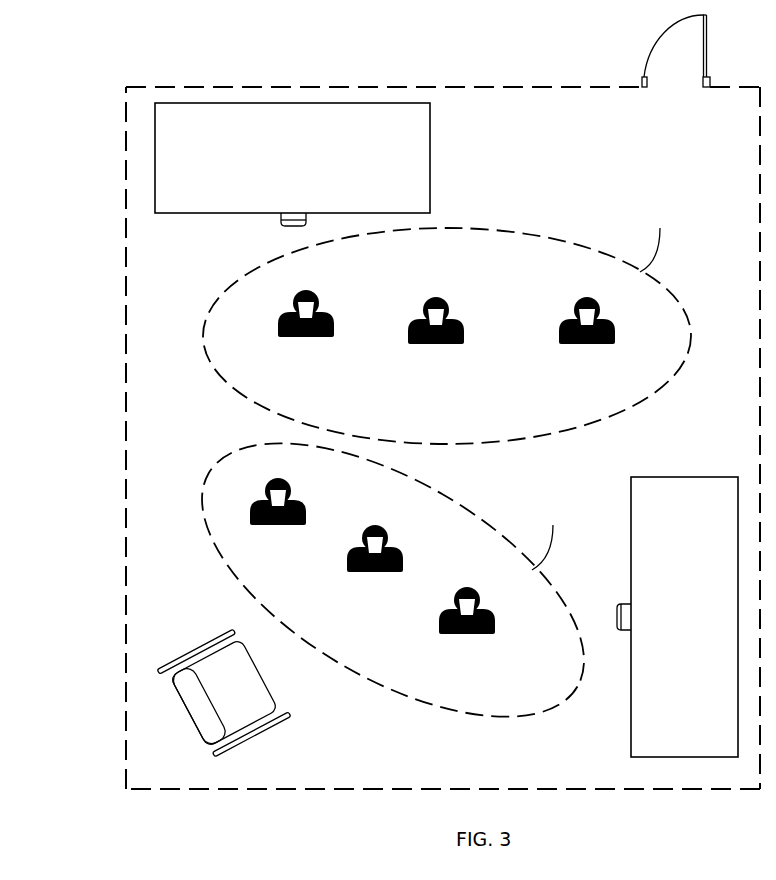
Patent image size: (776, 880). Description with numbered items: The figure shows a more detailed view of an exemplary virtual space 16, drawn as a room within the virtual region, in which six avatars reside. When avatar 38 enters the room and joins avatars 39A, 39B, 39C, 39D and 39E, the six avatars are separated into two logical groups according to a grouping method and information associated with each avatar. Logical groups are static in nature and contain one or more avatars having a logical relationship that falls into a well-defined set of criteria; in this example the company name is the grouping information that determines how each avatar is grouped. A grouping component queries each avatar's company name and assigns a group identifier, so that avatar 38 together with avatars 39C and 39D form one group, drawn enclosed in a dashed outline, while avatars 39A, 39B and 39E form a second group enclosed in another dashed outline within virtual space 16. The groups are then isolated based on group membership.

The virtual space 16 is at (44, 100).
The avatar 38 is at (280, 515).
The avatar 39A is at (305, 328).
The avatar 39B is at (434, 334).
The avatar 39C is at (373, 562).
The avatar 39D is at (465, 624).
The avatar 39E is at (587, 334).